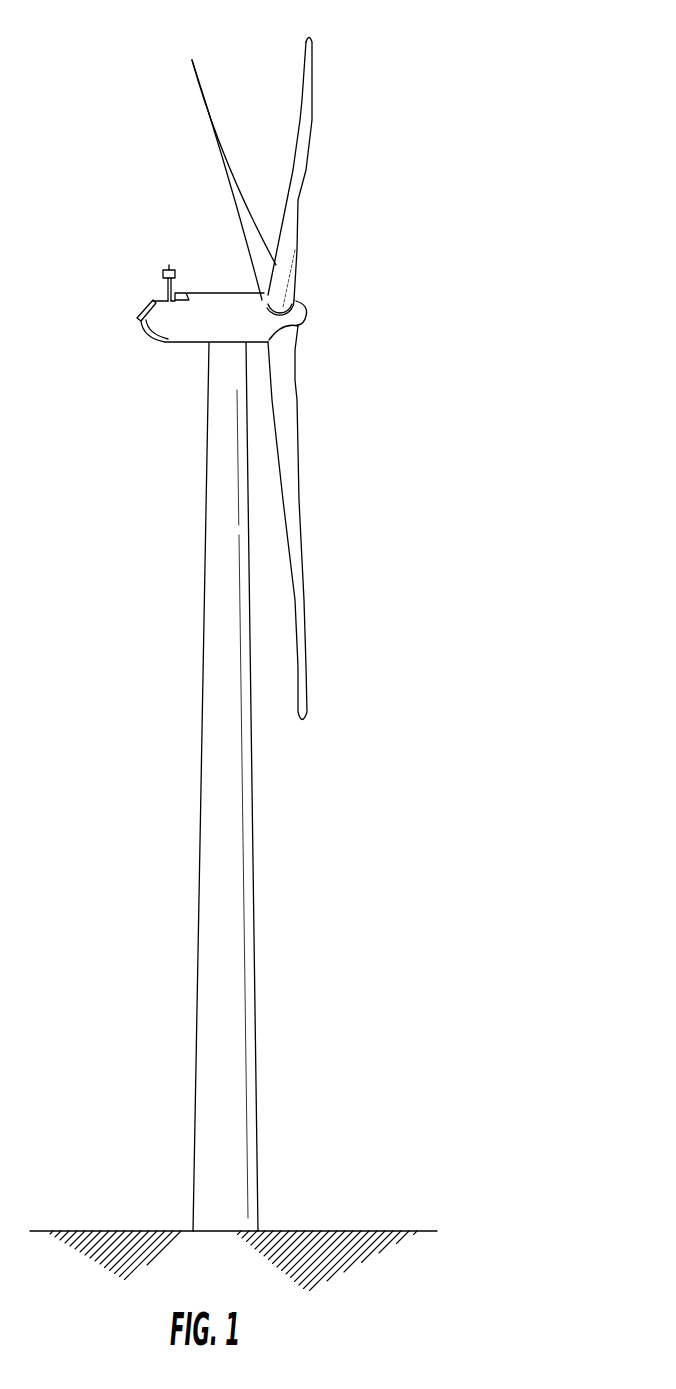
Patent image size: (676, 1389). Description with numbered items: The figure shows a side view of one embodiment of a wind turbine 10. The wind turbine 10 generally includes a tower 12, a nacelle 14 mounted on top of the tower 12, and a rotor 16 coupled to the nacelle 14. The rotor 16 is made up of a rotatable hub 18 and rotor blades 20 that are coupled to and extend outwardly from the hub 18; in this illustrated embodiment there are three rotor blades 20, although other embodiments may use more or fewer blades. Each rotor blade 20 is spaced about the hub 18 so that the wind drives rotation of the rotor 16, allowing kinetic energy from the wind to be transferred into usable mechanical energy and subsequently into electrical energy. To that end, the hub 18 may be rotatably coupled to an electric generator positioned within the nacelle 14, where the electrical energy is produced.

The wind turbine 10 is at (410, 127).
The tower 12 is at (212, 908).
The nacelle 14 is at (182, 343).
The rotor 16 is at (313, 292).
The rotatable hub 18 is at (305, 323).
The rotor blade 20 is at (302, 82).